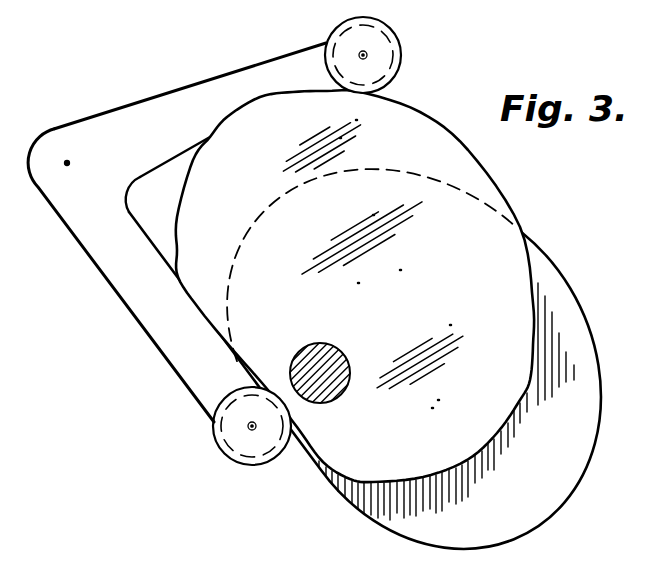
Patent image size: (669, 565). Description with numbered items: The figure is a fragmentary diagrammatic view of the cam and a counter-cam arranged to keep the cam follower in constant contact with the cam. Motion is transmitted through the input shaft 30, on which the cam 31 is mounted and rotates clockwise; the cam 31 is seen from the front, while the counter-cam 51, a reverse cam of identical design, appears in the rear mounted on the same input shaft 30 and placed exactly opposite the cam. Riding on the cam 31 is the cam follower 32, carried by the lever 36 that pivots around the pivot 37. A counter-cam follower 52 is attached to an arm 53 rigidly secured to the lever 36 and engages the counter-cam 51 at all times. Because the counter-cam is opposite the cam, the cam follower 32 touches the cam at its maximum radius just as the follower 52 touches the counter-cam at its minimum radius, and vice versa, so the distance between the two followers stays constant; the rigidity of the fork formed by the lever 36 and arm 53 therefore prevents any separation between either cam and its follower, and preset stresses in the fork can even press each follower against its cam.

The input shaft 30 is at (338, 362).
The cam 31 is at (488, 259).
The cam follower 32 is at (398, 58).
The lever 36 is at (187, 92).
The pivot point 37 is at (69, 162).
The counter-cam 51 is at (581, 446).
The counter-cam follower 52 is at (262, 452).
The arm 53 is at (127, 274).